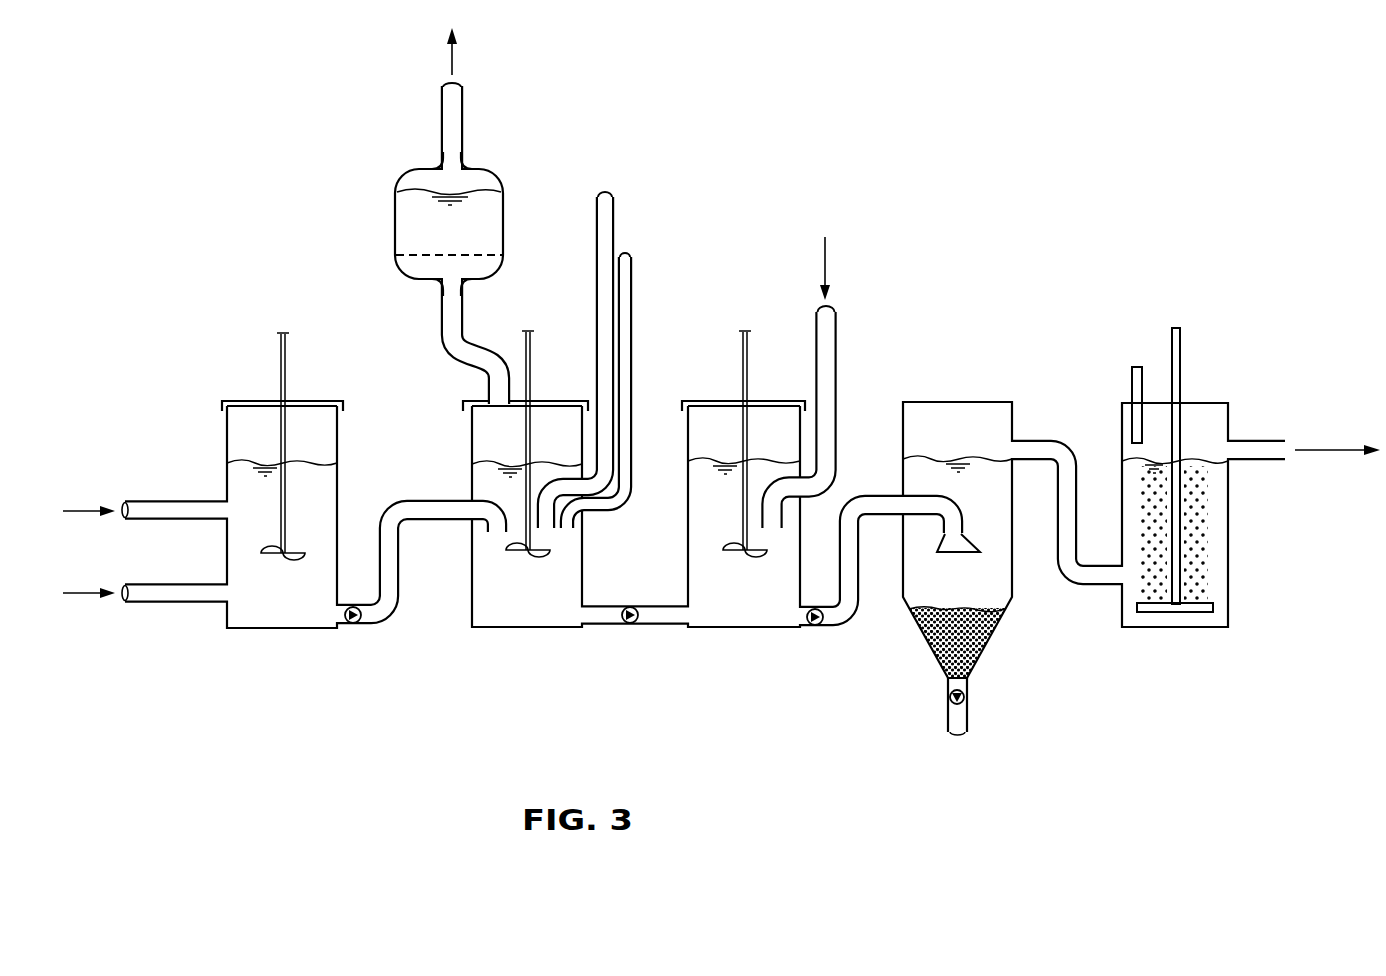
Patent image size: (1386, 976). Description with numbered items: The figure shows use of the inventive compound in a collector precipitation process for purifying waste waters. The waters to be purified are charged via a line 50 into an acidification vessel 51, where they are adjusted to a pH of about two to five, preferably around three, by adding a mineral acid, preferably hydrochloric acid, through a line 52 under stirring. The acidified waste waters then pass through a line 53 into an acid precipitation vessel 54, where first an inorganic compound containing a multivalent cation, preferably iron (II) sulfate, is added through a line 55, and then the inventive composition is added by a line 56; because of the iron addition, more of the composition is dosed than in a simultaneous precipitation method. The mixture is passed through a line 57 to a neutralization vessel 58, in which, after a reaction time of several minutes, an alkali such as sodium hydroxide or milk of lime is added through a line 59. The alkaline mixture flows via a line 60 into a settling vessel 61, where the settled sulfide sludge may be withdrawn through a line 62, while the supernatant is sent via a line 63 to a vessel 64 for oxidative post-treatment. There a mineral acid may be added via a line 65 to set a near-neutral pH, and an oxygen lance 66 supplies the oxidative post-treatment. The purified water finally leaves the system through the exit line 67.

The line 50 is at (146, 492).
The acidification vessel 51 is at (294, 610).
The line 52 is at (146, 615).
The line 53 is at (415, 500).
The acid precipitation vessel 54 is at (534, 609).
The line 55 is at (605, 234).
The line 56 is at (645, 217).
The line 57 is at (653, 628).
The neutralization vessel 58 is at (757, 609).
The line 59 is at (824, 383).
The line 60 is at (878, 462).
The settling vessel 61 is at (972, 601).
The line 62 is at (958, 742).
The line 63 is at (1078, 443).
The vessel 64 is at (1208, 413).
The line 65 is at (1137, 344).
The oxygen lance 66 is at (1175, 454).
The exit line 67 is at (1302, 466).